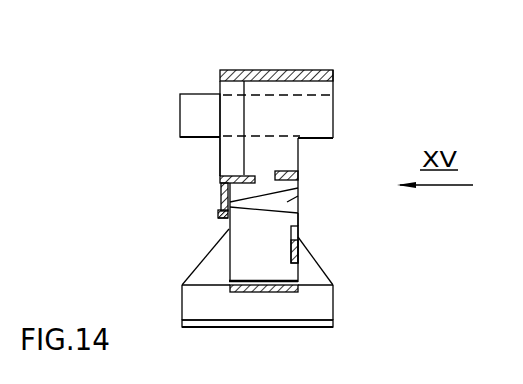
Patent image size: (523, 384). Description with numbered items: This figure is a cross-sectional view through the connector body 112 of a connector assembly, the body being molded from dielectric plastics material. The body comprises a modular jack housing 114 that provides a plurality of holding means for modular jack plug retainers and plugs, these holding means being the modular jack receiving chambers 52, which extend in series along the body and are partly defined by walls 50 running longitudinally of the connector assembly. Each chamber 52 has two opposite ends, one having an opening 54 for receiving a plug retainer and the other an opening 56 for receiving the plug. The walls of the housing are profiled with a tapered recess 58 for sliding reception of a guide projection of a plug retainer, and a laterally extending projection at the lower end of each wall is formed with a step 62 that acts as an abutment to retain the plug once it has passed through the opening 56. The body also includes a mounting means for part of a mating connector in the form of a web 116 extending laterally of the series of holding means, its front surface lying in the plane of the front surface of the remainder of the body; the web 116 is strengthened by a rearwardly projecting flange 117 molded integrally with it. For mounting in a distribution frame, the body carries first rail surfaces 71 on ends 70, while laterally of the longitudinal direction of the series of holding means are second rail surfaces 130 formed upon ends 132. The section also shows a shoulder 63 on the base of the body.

The rearwardly projecting flange 117 is at (322, 75).
The second rail surfaces 130 is at (202, 97).
The ends 132 is at (183, 112).
The web 116 is at (220, 158).
The connector body 112 is at (196, 180).
The walls 50 is at (219, 193).
The modular jack housing 114 is at (219, 220).
The opening 56 is at (228, 233).
The modular jack receiving chambers 52 is at (300, 210).
The tapered recess 58 is at (287, 202).
The opening 54 is at (300, 220).
The step 62 is at (244, 270).
The shoulder 63 is at (312, 286).
The ends 70 is at (333, 315).
The first rail surfaces 71 is at (260, 327).